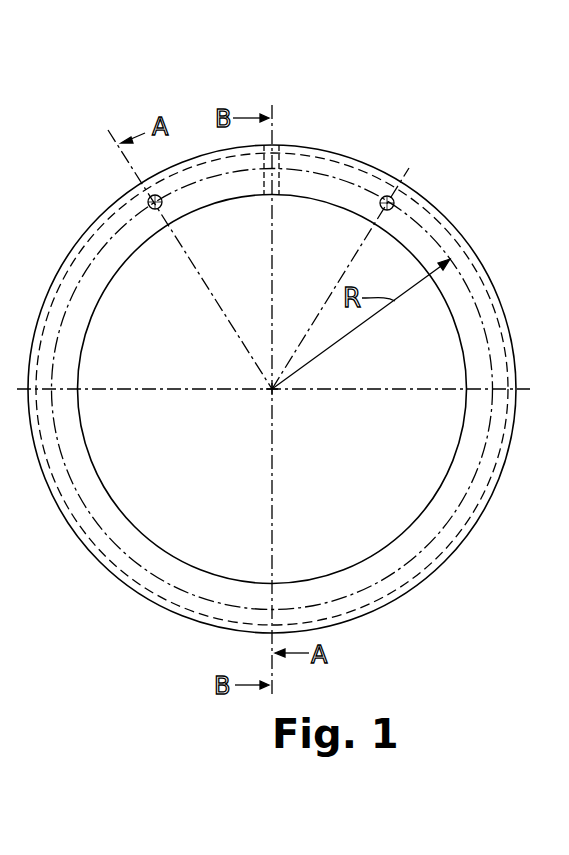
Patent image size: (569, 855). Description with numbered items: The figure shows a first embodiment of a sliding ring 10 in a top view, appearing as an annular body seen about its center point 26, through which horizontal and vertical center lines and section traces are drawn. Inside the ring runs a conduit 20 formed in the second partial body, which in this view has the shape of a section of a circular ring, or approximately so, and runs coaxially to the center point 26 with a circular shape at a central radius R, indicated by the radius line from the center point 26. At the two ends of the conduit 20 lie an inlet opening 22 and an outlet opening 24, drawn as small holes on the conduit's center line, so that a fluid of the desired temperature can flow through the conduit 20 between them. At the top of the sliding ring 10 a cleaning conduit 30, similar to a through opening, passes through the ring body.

The sliding ring 10 is at (438, 139).
The conduit 20 is at (470, 282).
The inlet opening 22 is at (396, 202).
The outlet opening 24 is at (148, 202).
The center point 26 is at (275, 392).
The cleaning conduit 30 is at (278, 158).